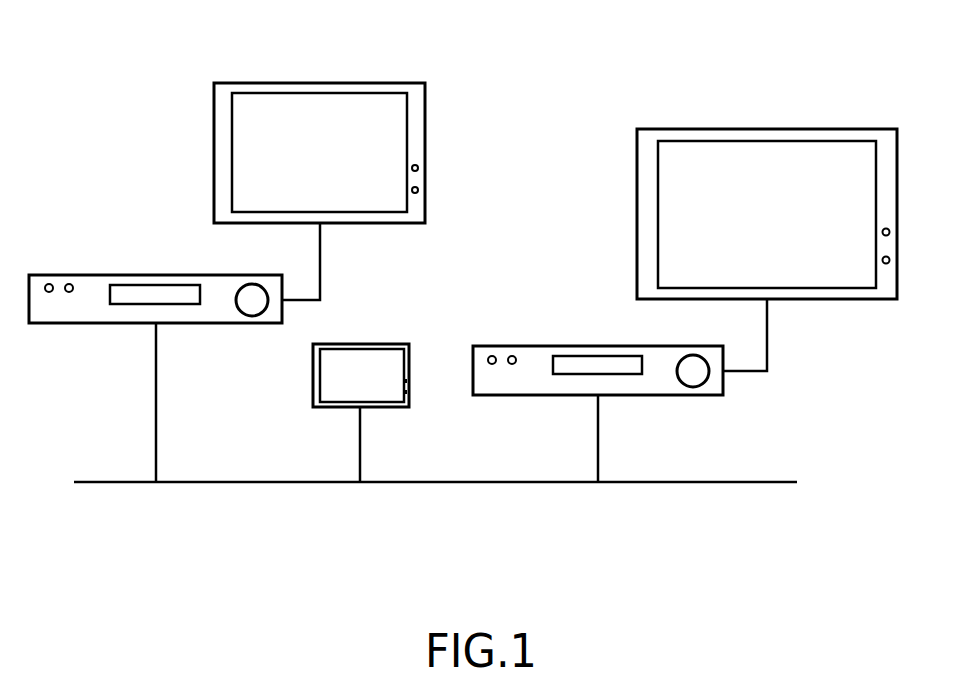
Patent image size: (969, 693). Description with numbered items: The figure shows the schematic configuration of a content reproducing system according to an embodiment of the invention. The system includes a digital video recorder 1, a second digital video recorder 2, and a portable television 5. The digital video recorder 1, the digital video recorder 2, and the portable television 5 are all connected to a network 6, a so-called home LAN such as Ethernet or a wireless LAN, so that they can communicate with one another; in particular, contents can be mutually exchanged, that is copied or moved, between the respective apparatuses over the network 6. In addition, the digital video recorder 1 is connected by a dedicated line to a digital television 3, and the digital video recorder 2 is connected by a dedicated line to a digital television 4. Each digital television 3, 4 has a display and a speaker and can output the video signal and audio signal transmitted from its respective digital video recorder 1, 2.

The digital video recorder 1 is at (90, 275).
The digital video recorder 2 is at (540, 346).
The digital television 3 is at (355, 83).
The digital television 4 is at (817, 129).
The portable television 5 is at (372, 344).
The network 6 is at (316, 483).